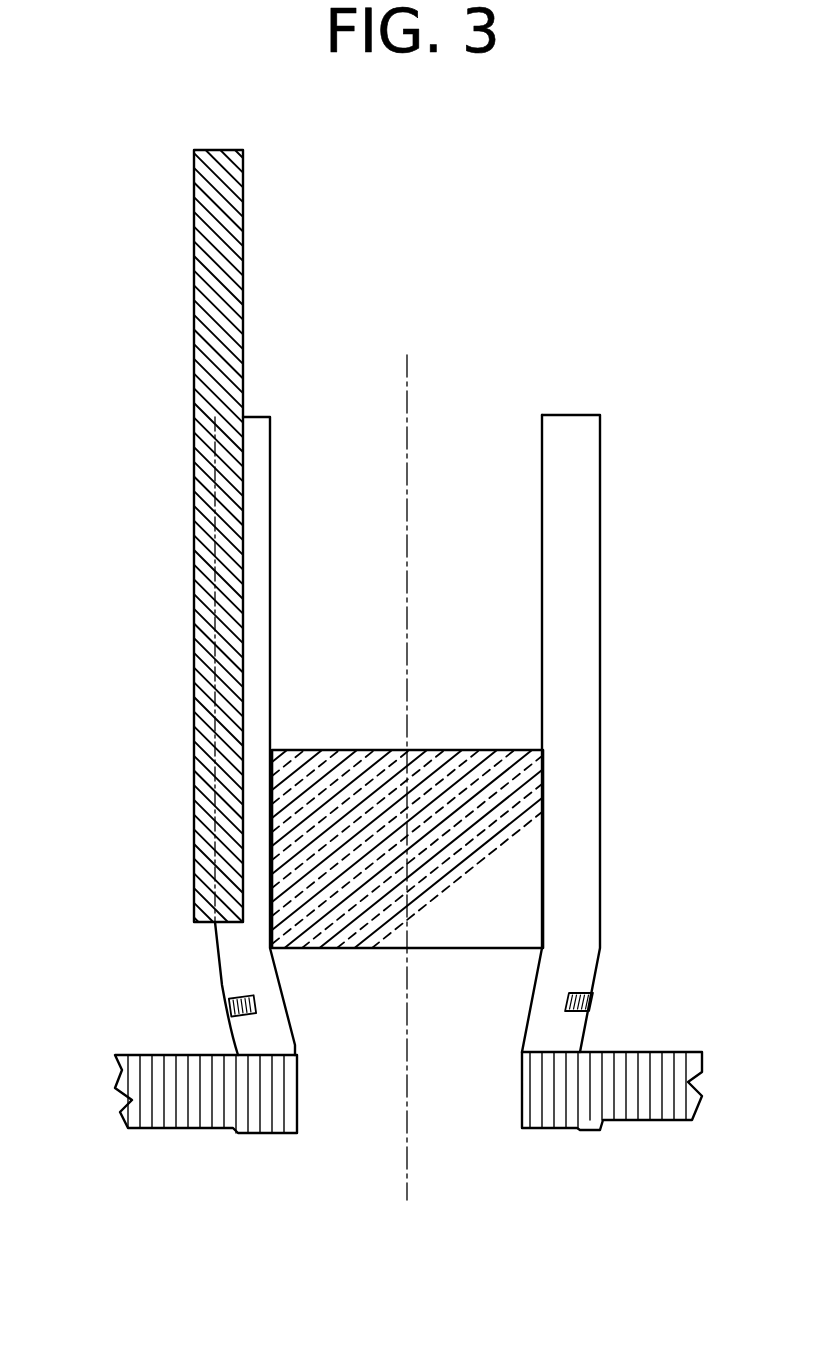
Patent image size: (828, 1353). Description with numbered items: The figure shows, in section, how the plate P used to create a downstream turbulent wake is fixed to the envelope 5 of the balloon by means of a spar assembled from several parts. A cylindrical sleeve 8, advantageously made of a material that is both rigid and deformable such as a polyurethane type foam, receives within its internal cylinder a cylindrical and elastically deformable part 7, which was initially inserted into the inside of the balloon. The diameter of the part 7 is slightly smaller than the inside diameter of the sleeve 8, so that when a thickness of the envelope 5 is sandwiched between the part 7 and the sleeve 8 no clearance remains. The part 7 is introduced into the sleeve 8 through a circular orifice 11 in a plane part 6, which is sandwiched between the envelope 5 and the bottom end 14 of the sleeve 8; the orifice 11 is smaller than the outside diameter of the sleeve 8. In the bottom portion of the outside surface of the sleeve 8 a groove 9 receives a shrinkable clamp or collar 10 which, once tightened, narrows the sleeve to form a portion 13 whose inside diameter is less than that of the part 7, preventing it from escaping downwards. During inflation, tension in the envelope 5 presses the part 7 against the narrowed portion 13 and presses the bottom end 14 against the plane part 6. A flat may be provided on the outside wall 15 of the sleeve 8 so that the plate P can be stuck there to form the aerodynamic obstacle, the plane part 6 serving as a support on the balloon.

The plate P is at (228, 292).
The envelope 5 is at (446, 748).
The plane part 6 is at (660, 1048).
The cylindrical and elastically deformable part 7 is at (480, 819).
The cylindrical sleeve 8 is at (566, 555).
The groove 9 is at (224, 994).
The shrinkable clamp or collar 10 is at (224, 1008).
The circular orifice 11 is at (511, 1095).
The narrowed portion of the sleeve 13 is at (552, 966).
The bottom end of the sleeve 14 is at (550, 1049).
The outside wall of the sleeve 15 is at (248, 591).